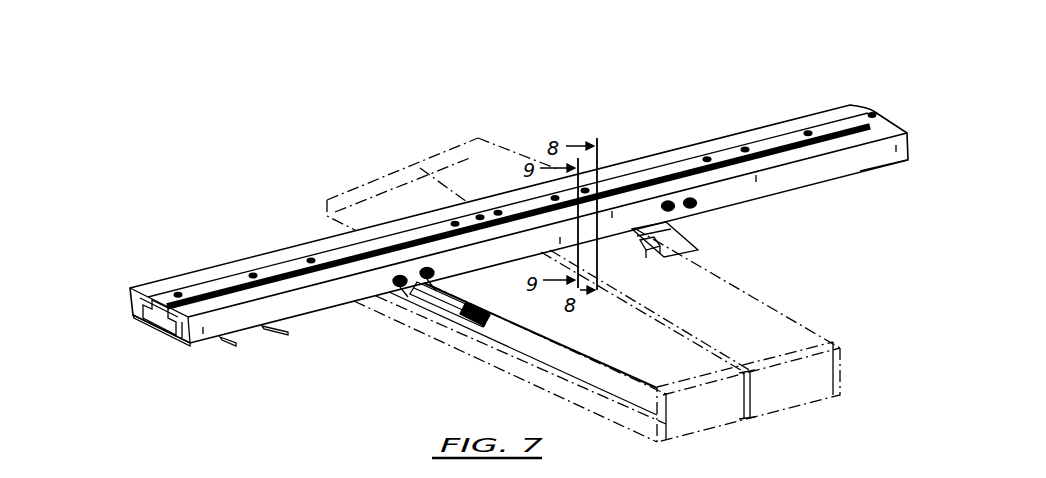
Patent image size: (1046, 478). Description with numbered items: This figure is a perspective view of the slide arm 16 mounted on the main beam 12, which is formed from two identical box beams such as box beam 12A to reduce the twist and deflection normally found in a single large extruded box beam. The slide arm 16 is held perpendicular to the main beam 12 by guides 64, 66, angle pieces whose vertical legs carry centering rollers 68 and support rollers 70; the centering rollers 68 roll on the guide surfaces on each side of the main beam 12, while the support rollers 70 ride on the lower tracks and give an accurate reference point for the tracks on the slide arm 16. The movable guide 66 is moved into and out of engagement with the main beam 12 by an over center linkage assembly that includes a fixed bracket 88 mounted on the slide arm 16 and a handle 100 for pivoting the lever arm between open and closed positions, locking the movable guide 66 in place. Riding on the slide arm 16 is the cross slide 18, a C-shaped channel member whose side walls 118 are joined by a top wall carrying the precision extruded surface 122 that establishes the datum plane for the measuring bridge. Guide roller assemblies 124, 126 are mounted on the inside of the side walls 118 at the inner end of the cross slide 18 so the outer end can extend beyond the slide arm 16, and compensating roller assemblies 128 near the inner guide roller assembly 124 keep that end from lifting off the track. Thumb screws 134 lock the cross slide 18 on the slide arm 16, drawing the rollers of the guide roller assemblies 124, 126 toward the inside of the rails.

The main beam 12 is at (812, 320).
The box beam 12A is at (834, 342).
The slide arm 16 is at (170, 332).
The cross slide 18 is at (200, 272).
The guide 64 is at (700, 242).
The movable guide 66 is at (450, 300).
The centering rollers 68 is at (473, 310).
The support rollers 70 is at (645, 252).
The fixed bracket 88 is at (285, 328).
The handle 100 is at (230, 338).
The side walls 118 is at (893, 158).
The precision extruded surface 122 is at (267, 273).
The guide roller assembly 124 is at (517, 190).
The guide roller assembly 126 is at (398, 286).
The compensating roller assemblies 128 is at (504, 262).
The thumb screws 134 is at (424, 280).